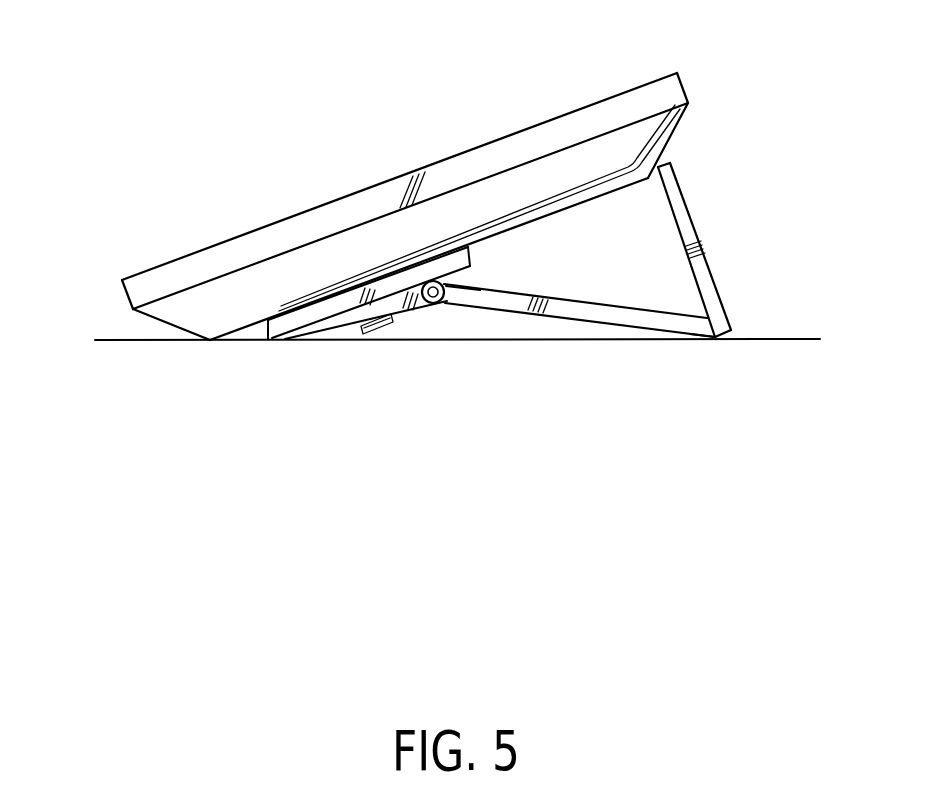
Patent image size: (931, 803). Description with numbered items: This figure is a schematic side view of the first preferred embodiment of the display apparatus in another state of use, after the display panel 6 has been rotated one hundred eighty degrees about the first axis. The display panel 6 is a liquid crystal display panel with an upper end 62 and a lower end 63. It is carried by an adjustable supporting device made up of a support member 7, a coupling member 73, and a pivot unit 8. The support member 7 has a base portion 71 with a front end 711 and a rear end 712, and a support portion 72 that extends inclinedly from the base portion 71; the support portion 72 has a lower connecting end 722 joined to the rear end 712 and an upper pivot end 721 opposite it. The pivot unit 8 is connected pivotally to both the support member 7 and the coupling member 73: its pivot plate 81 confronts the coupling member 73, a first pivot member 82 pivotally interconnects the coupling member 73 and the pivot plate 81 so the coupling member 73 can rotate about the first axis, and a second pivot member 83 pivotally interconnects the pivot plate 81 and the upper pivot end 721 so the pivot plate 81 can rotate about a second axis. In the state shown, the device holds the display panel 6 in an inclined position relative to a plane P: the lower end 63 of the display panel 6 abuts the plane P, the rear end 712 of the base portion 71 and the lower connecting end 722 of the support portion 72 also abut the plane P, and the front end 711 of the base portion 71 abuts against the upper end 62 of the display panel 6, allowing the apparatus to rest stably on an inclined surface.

The display panel 6 is at (450, 228).
The upper end 62 is at (660, 132).
The lower end 63 is at (215, 340).
The support member 7 is at (634, 270).
The base portion 71 is at (741, 228).
The front end 711 is at (660, 166).
The rear end 712 is at (733, 323).
The support portion 72 is at (588, 352).
The upper pivot end 721 is at (458, 297).
The lower connecting end 722 is at (703, 328).
The coupling member 73 is at (282, 340).
The pivot unit 8 is at (374, 362).
The pivot plate 81 is at (307, 340).
The first pivot member 82 is at (360, 333).
The second pivot member 83 is at (437, 304).
The plane P is at (762, 345).